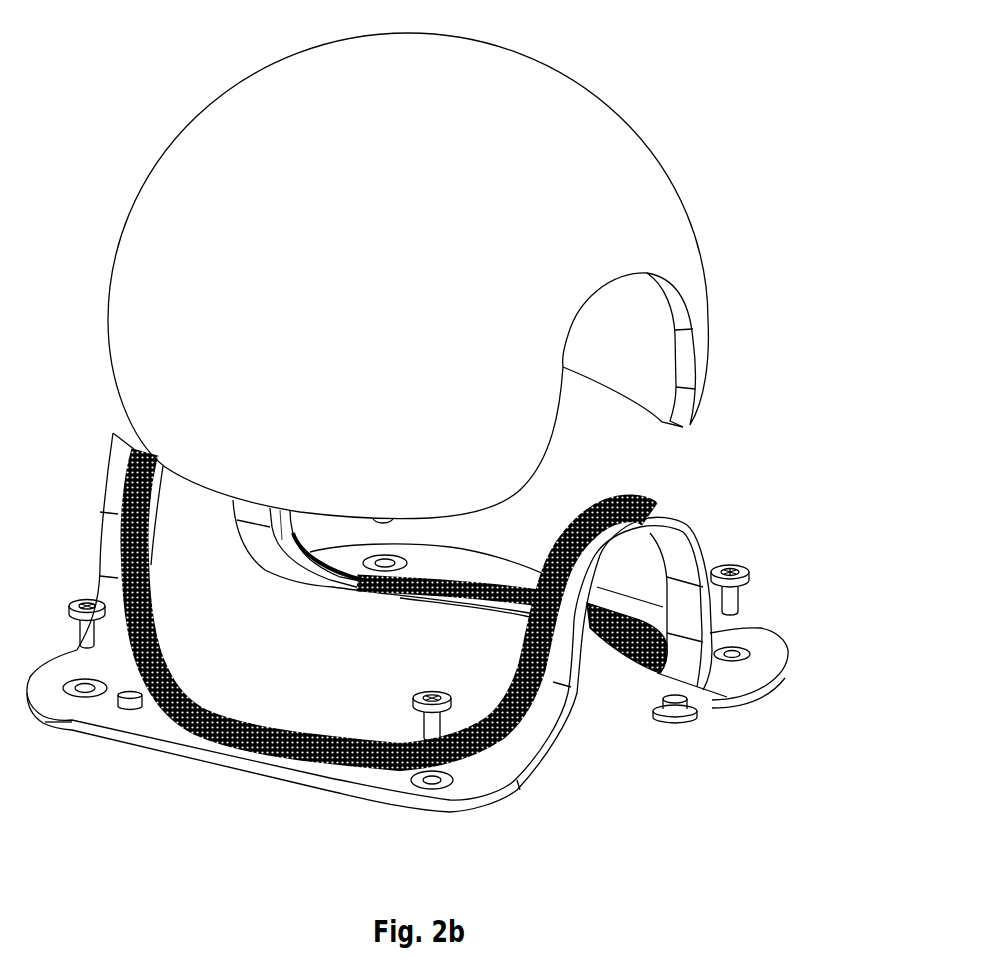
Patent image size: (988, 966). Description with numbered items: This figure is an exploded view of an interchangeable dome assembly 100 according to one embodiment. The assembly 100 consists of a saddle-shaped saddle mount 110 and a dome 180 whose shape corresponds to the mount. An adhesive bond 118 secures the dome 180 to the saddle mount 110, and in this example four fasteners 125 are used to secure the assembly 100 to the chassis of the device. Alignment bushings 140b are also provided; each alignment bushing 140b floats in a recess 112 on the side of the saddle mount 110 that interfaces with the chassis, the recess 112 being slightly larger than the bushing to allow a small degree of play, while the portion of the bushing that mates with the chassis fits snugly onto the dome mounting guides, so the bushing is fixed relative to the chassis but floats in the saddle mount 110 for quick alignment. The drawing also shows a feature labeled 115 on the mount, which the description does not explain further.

The interchangeable dome assembly 100 is at (82, 78).
The dome 180 is at (597, 97).
The saddle mount 110 is at (663, 517).
The recess 112 is at (713, 640).
The mounting hole 115 is at (740, 657).
The adhesive bond 118 is at (122, 528).
The fasteners 125 is at (737, 578).
The alignment bushing 140b is at (683, 724).